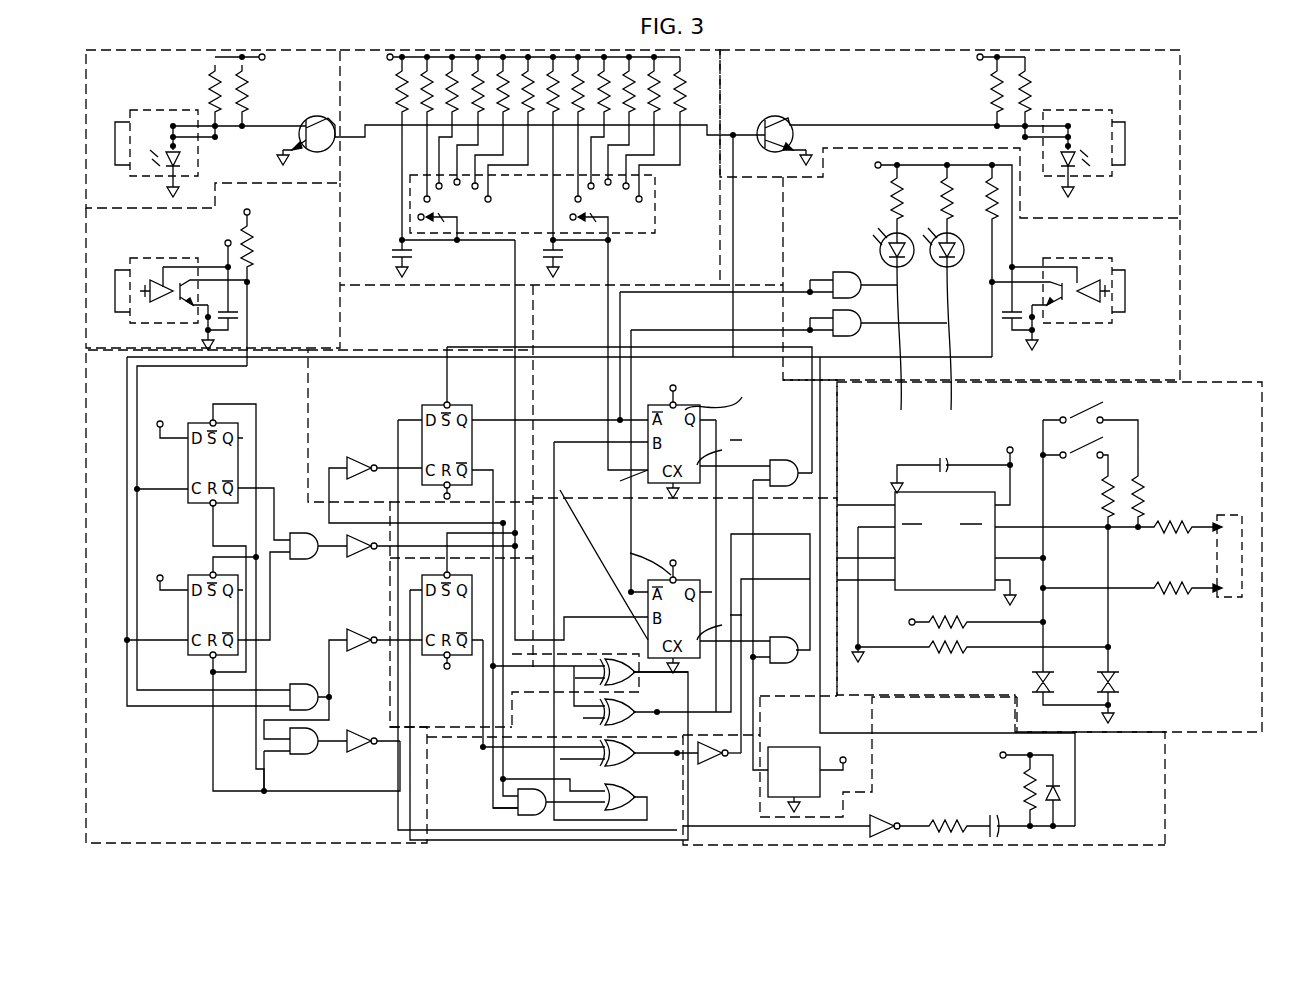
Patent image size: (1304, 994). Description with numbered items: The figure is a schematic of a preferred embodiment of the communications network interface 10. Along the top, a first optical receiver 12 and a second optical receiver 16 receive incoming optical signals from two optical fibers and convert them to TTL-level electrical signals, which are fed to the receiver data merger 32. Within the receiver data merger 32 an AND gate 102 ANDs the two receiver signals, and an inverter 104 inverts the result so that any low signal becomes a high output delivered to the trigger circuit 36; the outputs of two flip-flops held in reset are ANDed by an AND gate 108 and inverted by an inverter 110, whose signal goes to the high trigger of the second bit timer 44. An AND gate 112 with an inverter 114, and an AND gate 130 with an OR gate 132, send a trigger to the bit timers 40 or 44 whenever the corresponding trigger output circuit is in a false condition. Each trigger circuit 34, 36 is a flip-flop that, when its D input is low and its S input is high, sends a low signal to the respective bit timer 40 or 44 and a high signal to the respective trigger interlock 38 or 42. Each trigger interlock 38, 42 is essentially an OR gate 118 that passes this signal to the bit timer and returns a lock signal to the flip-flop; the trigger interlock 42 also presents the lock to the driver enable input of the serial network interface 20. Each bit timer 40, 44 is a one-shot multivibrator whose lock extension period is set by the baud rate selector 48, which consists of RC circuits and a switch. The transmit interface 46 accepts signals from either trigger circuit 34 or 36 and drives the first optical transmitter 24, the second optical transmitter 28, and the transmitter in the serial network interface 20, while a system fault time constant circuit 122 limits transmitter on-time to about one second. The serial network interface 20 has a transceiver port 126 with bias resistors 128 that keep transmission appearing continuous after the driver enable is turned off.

The communications network interface 10 is at (1180, 215).
The first optical receiver 12 is at (115, 342).
The second optical receiver 16 is at (1153, 366).
The RS-485 interface 20 is at (1222, 702).
The first optical transmitter 24 is at (135, 85).
The second optical transmitter 28 is at (846, 90).
The receiver data merger 32 is at (140, 830).
The first trigger circuit 34 is at (356, 398).
The second trigger circuit 36 is at (471, 718).
The first trigger interlock 38 is at (541, 686).
The first bit timer 40 is at (795, 410).
The second trigger interlock 42 is at (692, 770).
The second bit timer 44 is at (790, 611).
The transmit interface 46 is at (942, 794).
The baud rate selector 48 is at (697, 226).
The AND gate 102 is at (300, 684).
The inverter 104 is at (345, 630).
The AND gate 108 is at (316, 560).
The inverter 110 is at (368, 560).
The AND gate 112 is at (316, 760).
The inverter 114 is at (363, 754).
The OR gate 118 is at (628, 700).
The system fault time constant circuit 122 is at (1058, 812).
The transceiver port 126 is at (1227, 517).
The bias resistors 128 is at (940, 662).
The AND gate 130 is at (518, 812).
The OR gate 132 is at (605, 812).